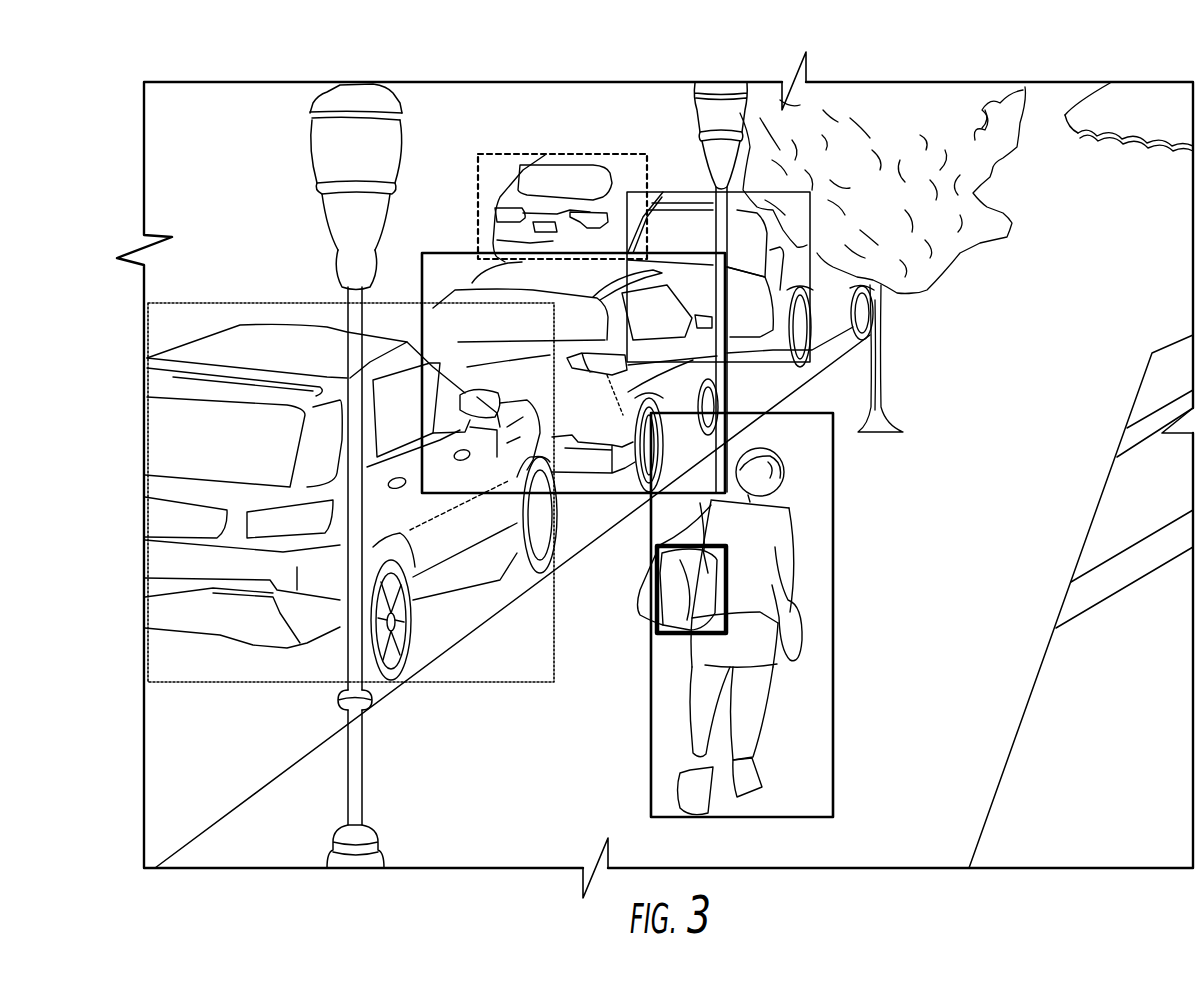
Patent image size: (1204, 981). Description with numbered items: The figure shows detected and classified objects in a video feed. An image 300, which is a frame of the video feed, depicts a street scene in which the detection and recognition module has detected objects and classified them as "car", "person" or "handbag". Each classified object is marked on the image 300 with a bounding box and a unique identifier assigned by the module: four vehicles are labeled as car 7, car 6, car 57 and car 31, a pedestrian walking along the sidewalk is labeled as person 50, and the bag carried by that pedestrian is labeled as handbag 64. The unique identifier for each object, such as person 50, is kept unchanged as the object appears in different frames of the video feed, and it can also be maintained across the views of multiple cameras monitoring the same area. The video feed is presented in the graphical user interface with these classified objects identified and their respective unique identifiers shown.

The image 300 is at (663, 60).
The car 7 is at (351, 475).
The car 6 is at (573, 357).
The car 57 is at (562, 191).
The car 31 is at (750, 261).
The person 50 is at (736, 597).
The handbag 64 is at (712, 568).